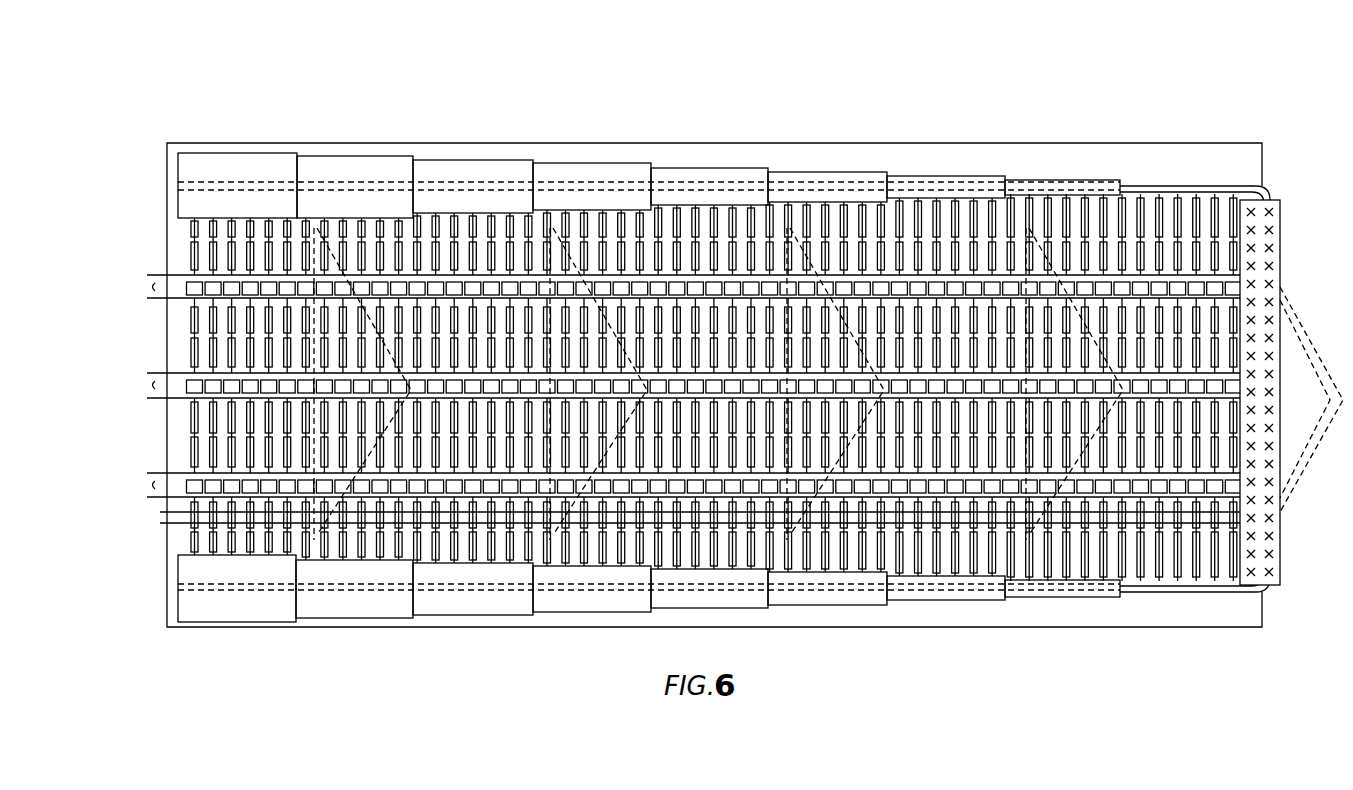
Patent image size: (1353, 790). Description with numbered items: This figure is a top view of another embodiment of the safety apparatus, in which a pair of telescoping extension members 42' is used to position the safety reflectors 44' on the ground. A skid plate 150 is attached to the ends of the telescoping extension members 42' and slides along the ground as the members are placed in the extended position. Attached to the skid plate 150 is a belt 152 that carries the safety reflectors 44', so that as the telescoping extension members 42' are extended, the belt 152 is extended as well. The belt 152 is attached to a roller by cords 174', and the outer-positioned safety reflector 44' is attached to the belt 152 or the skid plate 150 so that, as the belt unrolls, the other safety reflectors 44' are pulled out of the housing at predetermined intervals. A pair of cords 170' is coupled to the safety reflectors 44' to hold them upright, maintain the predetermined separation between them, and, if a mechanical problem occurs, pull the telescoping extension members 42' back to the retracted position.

The telescoping extension members 42' is at (230, 383).
The safety reflectors 44' is at (718, 309).
The belt 152 is at (691, 215).
The skid plate 150 is at (1270, 215).
The pair of cords 170' is at (670, 409).
The cords 174' is at (668, 412).